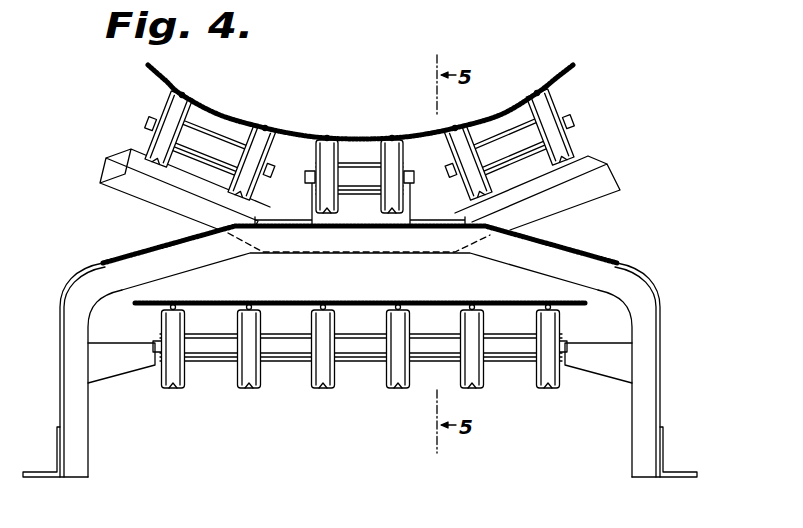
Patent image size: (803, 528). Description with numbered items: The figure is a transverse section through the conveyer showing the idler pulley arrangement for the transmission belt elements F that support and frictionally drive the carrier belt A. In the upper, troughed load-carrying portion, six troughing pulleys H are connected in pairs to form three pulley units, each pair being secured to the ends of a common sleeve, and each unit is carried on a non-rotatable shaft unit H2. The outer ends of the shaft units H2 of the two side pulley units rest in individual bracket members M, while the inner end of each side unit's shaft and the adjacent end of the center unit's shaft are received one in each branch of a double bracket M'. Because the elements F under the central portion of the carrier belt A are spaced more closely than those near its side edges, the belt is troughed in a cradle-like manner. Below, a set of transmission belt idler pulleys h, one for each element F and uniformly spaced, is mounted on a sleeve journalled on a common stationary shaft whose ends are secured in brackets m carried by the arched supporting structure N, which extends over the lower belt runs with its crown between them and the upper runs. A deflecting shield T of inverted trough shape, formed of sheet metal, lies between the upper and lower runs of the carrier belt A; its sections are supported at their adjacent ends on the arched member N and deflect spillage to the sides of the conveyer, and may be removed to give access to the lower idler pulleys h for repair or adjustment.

The carrier belt A is at (358, 135).
The transmission belt element F is at (325, 128).
The troughing pulley H is at (250, 137).
The shaft unit H2 is at (590, 111).
The bracket member M is at (358, 175).
The double bracket M' is at (360, 204).
The deflecting shield T is at (590, 263).
The arched member N is at (648, 307).
The bracket m is at (103, 369).
The transmission belt idler pulley h is at (186, 384).